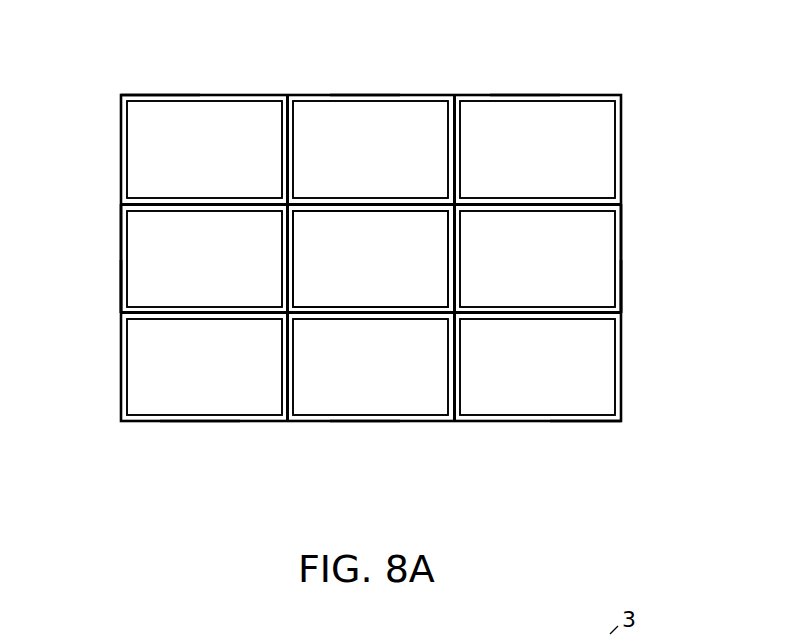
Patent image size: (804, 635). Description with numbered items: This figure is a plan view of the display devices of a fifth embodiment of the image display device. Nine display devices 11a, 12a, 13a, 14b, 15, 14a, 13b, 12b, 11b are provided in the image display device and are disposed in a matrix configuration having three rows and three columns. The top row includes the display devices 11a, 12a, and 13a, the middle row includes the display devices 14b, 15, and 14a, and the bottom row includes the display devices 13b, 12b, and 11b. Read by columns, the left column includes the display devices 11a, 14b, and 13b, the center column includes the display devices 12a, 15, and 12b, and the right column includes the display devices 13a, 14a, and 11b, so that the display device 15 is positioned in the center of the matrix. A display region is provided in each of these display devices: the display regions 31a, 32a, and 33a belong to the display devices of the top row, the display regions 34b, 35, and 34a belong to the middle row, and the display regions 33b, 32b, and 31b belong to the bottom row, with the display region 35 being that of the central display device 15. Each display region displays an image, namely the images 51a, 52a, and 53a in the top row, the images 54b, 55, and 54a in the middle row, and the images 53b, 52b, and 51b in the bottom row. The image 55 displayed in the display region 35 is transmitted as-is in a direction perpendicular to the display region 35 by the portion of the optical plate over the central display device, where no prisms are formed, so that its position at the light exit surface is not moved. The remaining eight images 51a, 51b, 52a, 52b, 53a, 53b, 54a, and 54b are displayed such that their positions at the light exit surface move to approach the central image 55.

The display device 11a is at (207, 96).
The display device 12a is at (402, 96).
The display device 13a is at (587, 96).
The display device 11b is at (527, 423).
The display device 12b is at (328, 423).
The display device 13b is at (143, 423).
The display device 14a is at (622, 243).
The display device 14b is at (120, 245).
The display device 15 is at (448, 228).
The display region 31a is at (173, 96).
The display region 32a is at (365, 96).
The display region 33a is at (525, 96).
The display region 31b is at (580, 423).
The display region 32b is at (362, 423).
The display region 33b is at (203, 423).
The display region 34a is at (620, 280).
The display region 34b is at (120, 283).
The display region 35 is at (438, 243).
The image 51a is at (175, 155).
The image 52a is at (327, 150).
The image 53a is at (497, 150).
The image 51b is at (503, 363).
The image 52b is at (318, 372).
The image 53b is at (175, 367).
The image 54a is at (572, 283).
The image 54b is at (175, 237).
The image 55 is at (412, 272).